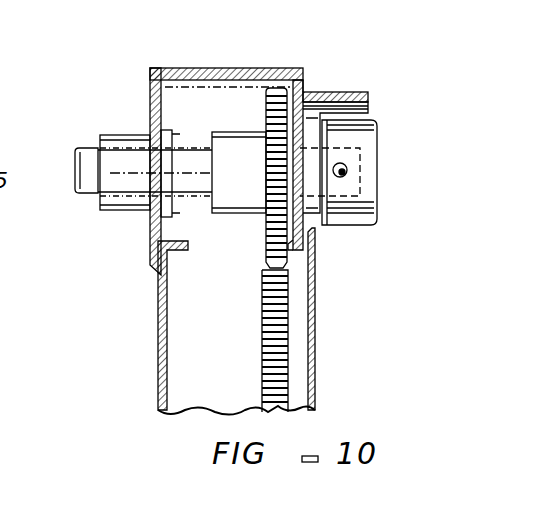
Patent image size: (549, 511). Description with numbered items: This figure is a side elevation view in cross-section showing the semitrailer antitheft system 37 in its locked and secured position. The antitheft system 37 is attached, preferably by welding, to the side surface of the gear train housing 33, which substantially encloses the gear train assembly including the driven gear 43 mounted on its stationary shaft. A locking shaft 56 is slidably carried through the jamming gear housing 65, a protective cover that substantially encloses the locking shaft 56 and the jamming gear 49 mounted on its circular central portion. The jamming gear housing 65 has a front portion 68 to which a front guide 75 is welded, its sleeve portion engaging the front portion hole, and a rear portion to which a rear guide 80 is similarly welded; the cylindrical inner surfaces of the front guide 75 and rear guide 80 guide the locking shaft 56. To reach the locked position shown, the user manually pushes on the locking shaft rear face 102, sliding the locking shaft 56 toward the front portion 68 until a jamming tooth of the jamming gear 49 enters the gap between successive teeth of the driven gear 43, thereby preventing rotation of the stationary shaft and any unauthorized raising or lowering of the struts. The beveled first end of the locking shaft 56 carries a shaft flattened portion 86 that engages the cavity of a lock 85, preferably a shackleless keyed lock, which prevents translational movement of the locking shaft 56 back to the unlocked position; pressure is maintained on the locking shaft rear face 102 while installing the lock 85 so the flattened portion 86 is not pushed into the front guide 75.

The semitrailer antitheft system 37 is at (148, 74).
The jamming gear housing 65 is at (240, 69).
The front portion 68 is at (308, 82).
The front guide 75 is at (368, 111).
The lock 85 is at (352, 226).
The shaft flattened portion 86 is at (348, 181).
The jamming gear 49 is at (266, 112).
The driven gear 43 is at (262, 321).
The locking shaft 56 is at (88, 194).
The rear guide 80 is at (138, 138).
The locking shaft rear face 102 is at (75, 162).
The gear train housing 33 is at (158, 362).